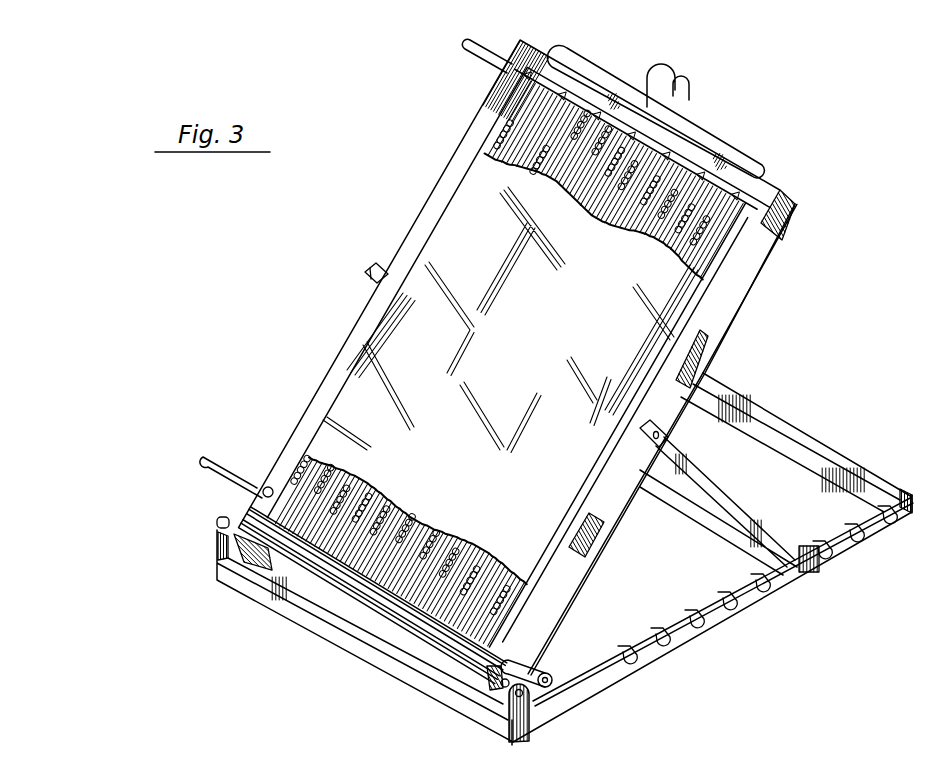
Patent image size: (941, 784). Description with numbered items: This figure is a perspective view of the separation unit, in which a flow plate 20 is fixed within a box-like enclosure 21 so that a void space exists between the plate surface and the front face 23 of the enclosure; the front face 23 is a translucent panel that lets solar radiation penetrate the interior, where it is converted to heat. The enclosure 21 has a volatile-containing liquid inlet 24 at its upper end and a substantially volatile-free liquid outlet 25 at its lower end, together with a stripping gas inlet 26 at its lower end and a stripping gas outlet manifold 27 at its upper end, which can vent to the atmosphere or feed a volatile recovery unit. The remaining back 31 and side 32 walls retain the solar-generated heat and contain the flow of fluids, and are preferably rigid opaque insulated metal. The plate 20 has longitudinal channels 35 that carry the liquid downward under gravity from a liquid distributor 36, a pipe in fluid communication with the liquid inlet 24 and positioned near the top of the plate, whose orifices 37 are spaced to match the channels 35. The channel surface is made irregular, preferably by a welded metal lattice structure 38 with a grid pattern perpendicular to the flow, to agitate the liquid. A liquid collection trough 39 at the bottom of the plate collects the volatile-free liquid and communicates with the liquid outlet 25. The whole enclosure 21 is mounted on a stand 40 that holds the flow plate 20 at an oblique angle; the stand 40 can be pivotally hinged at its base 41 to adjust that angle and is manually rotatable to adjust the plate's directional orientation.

The flow plate 20 is at (694, 231).
The box-like enclosure 21 is at (795, 193).
The front face 23 is at (543, 340).
The volatile-containing liquid inlet 24 is at (492, 46).
The volatile-free liquid outlet 25 is at (540, 670).
The stripping gas inlet 26 is at (238, 466).
The stripping gas outlet manifold 27 is at (605, 67).
The back wall 31 is at (725, 340).
The side wall 32 is at (735, 297).
The channels 35 is at (366, 568).
The liquid distributor 36 is at (688, 146).
The orifices 37 is at (742, 160).
The metal lattice structure 38 is at (300, 528).
The liquid collection trough 39 is at (445, 620).
The stand 40 is at (820, 430).
The base 41 is at (524, 703).